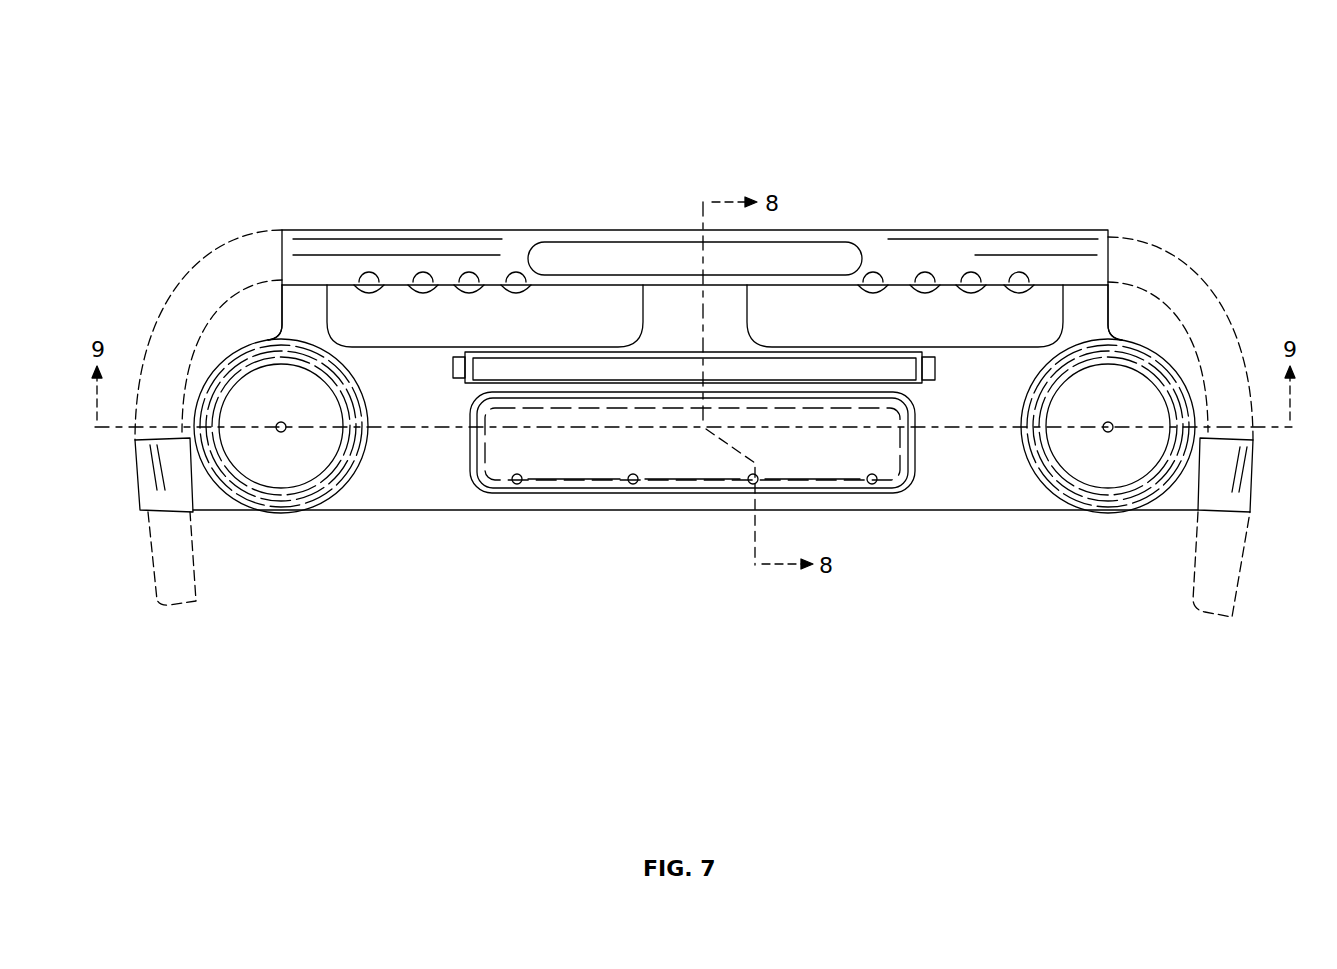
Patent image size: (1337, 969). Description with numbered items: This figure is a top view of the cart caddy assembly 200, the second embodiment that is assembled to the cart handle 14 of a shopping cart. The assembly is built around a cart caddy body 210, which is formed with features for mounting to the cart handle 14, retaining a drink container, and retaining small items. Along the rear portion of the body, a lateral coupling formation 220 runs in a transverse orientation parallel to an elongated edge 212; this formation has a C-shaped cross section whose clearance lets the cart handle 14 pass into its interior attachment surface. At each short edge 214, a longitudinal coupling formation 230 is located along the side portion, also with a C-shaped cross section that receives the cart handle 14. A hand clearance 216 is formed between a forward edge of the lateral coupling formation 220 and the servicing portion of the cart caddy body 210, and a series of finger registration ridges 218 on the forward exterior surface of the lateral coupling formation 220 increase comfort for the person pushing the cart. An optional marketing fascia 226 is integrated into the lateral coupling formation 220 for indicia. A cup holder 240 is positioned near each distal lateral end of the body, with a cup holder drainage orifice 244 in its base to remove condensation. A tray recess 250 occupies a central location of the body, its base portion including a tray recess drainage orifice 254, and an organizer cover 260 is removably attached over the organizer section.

The cart handle 14 is at (187, 263).
The cart caddy assembly 200 is at (1033, 176).
The cart caddy body 210 is at (942, 512).
The elongated edge 212 is at (712, 142).
The short edge 214 is at (230, 321).
The hand clearance 216 is at (424, 320).
The finger registration ridges 218 is at (476, 291).
The lateral coupling formation 220 is at (500, 229).
The marketing fascia 226 is at (666, 256).
The longitudinal coupling formation 230 is at (137, 480).
The cup holder 240 is at (236, 466).
The cup holder drainage orifice 244 is at (290, 425).
The tray recess 250 is at (483, 449).
The tray recess drainage orifice 254 is at (640, 482).
The organizer cover 260 is at (888, 366).